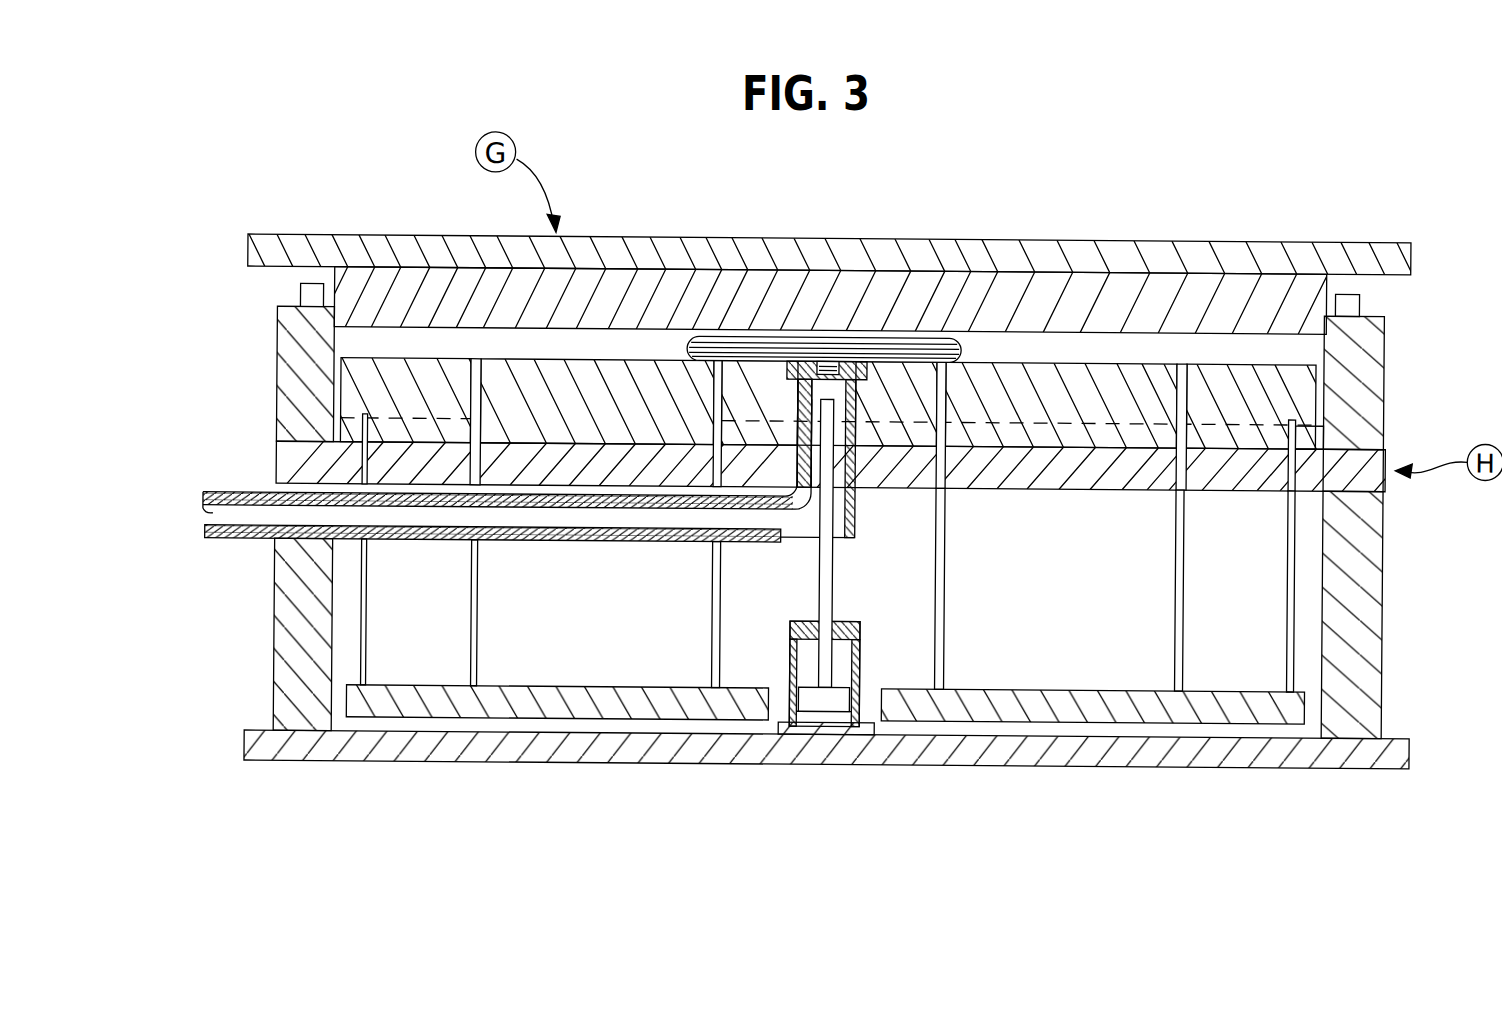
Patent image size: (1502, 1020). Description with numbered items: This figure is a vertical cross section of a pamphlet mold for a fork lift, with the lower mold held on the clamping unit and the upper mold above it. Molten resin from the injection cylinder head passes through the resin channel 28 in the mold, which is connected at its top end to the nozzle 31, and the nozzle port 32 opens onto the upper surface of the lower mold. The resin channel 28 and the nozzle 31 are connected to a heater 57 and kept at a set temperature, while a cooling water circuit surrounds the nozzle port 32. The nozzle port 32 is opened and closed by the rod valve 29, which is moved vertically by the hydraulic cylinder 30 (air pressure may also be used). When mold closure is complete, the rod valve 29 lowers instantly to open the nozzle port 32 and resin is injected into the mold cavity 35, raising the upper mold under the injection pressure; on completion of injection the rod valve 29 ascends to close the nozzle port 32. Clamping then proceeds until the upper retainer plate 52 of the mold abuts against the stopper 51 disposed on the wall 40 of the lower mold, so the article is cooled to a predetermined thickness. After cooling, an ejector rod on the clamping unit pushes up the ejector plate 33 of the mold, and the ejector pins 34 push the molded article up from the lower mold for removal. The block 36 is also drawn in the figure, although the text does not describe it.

The resin channel 28 is at (220, 507).
The rod valve 29 is at (822, 581).
The hydraulic cylinder 30 is at (793, 669).
The nozzle 31 is at (855, 518).
The nozzle port 32 is at (834, 358).
The ejector plate 33 is at (1098, 703).
The ejector pins 34 is at (1181, 580).
The mold cavity 35 is at (1297, 339).
The block 36 is at (1288, 385).
The wall 40 is at (290, 400).
The stopper 51 is at (300, 295).
The upper retainer plate 52 is at (1289, 260).
The heater 57 is at (850, 488).